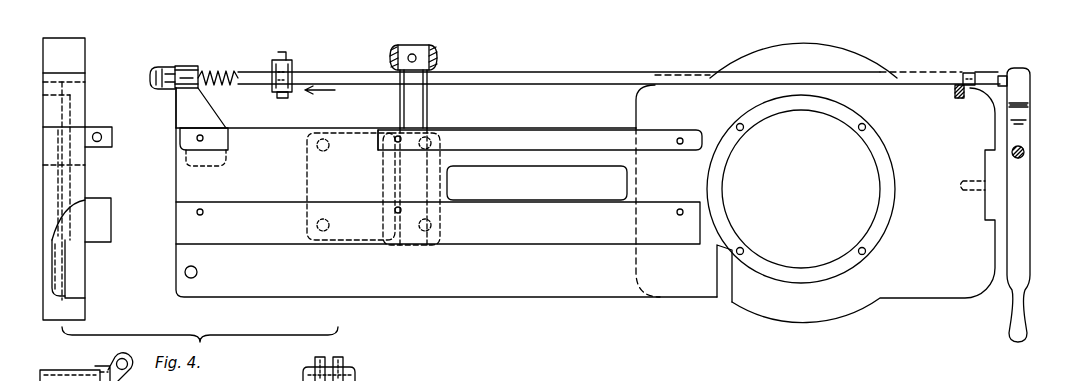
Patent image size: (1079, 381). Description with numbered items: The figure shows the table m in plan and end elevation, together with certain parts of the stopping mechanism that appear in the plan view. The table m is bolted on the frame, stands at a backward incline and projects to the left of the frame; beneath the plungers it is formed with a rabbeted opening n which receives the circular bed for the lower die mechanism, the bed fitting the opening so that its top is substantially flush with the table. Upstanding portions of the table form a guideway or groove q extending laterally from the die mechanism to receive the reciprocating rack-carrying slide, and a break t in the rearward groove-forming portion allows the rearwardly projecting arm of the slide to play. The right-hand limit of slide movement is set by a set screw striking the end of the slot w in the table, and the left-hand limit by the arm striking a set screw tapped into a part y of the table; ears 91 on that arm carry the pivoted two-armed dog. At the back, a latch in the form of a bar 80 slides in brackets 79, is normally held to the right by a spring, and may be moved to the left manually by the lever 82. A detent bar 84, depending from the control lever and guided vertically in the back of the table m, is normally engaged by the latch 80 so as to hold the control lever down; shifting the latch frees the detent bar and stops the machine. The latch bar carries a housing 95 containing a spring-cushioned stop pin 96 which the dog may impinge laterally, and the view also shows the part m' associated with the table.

The brackets 79 is at (195, 66).
The latch bar 80 is at (586, 76).
The lever 82 is at (1022, 292).
The detent bar 84 is at (955, 99).
The ears 91 is at (330, 357).
The housing 95 is at (292, 62).
The stop pin 96 is at (284, 98).
The table m is at (503, 209).
The sliding piece m' is at (235, 189).
The rabbeted opening n is at (808, 262).
The guideway or groove q is at (543, 148).
The break t is at (340, 128).
The slot w is at (537, 183).
The part of the table y is at (232, 128).